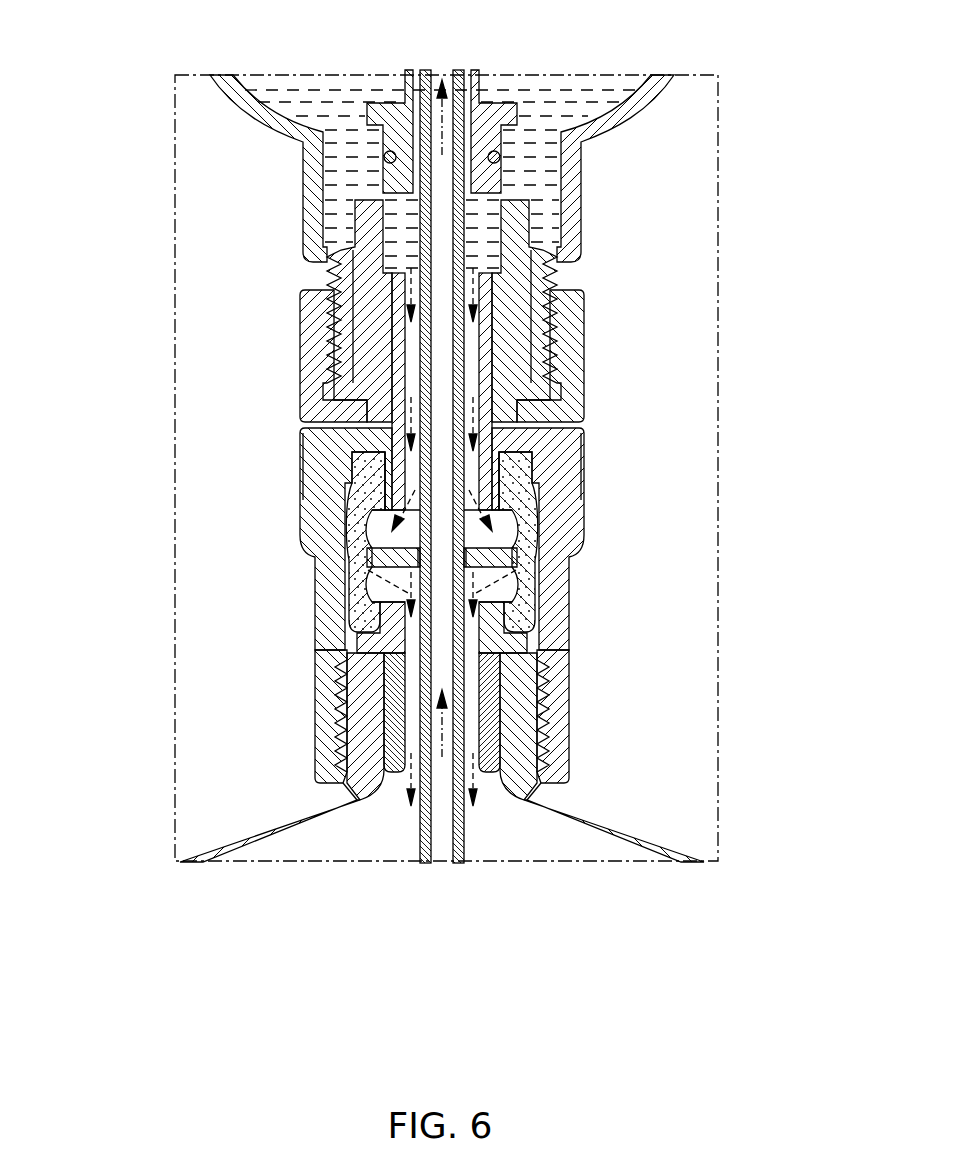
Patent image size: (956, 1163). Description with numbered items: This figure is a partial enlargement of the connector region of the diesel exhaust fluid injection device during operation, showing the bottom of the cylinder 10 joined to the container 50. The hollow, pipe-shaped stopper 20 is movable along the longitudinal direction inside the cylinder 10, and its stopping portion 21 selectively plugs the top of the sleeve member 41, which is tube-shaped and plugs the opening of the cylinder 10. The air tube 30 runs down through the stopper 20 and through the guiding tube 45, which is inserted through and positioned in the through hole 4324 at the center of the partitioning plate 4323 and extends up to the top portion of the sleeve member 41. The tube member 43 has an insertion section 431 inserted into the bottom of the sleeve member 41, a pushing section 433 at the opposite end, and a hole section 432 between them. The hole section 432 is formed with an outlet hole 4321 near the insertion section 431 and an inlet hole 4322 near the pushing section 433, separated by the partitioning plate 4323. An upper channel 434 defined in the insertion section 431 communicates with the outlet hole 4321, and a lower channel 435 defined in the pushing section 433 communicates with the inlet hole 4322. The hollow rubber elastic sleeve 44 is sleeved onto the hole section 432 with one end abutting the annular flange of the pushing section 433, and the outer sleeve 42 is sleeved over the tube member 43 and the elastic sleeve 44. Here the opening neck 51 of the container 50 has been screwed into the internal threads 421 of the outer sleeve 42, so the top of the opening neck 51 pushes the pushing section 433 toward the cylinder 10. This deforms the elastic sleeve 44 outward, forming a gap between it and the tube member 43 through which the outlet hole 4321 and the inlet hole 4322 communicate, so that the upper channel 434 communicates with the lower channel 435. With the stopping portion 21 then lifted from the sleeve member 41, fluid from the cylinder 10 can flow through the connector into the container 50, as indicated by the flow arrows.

The cylinder 10 is at (263, 128).
The stopper 20 is at (453, 123).
The stopping portion 21 is at (473, 117).
The air tube 30 is at (425, 135).
The sleeve member 41 is at (520, 283).
The outer sleeve 42 is at (337, 705).
The tube member 43 is at (390, 470).
The elastic sleeve 44 is at (533, 507).
The guiding tube 45 is at (462, 242).
The container 50 is at (270, 823).
The opening neck 51 is at (343, 730).
The internal threads 421 is at (337, 682).
The insertion section 431 is at (398, 360).
The hole section 432 is at (492, 475).
The pushing section 433 is at (527, 638).
The upper channel 434 is at (415, 338).
The lower channel 435 is at (480, 690).
The outlet hole 4321 is at (507, 537).
The inlet hole 4322 is at (505, 592).
The partitioning plate 4323 is at (390, 557).
The through hole 4324 is at (420, 562).